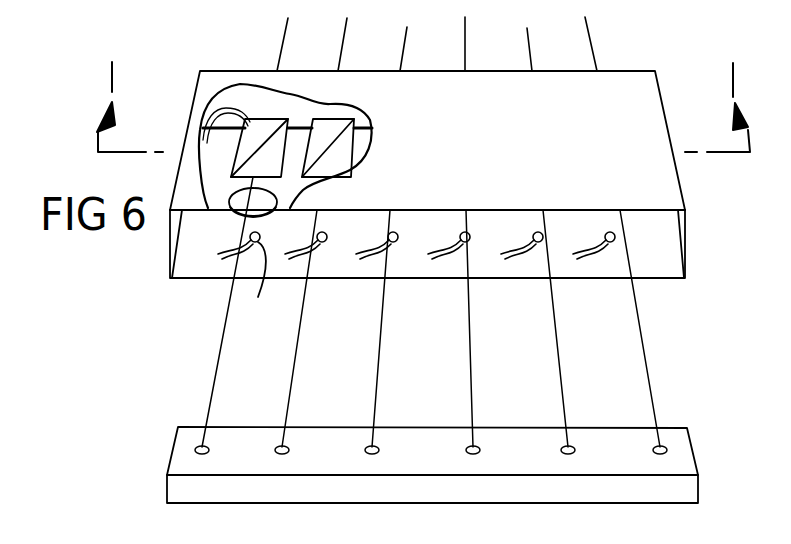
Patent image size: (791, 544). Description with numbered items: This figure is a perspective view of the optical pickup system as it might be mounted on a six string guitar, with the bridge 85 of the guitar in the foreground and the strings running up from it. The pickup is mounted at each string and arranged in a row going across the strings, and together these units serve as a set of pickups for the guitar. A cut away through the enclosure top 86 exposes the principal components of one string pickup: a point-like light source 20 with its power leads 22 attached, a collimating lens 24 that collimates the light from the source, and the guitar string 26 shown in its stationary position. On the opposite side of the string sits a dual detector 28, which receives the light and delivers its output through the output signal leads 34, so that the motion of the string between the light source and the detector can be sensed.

The point-like light source 20 is at (265, 287).
The power leads 22 is at (222, 263).
The collimating lens 24 is at (229, 205).
The guitar string 26 is at (231, 305).
The dual detector 28 is at (259, 125).
The output signal leads 34 is at (220, 108).
The bridge 85 is at (670, 438).
The enclosure top 86 is at (635, 93).